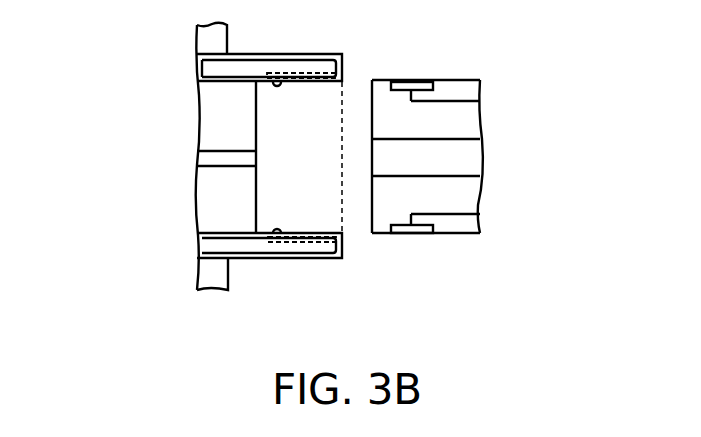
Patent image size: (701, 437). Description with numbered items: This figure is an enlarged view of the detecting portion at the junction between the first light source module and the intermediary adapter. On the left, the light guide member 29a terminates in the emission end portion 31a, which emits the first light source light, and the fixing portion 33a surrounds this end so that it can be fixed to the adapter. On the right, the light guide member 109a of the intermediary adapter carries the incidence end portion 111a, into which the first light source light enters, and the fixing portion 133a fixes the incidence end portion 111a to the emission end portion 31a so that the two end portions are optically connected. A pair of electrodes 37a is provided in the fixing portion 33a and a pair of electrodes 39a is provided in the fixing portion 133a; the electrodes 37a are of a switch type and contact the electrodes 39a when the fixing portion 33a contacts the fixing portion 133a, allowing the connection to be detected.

The light guide member 29a is at (238, 150).
The emission end portion 31a is at (257, 157).
The fixing portion 33a is at (332, 260).
The electrodes 37a is at (302, 73).
The electrodes 39a is at (420, 80).
The light guide member 109a is at (473, 157).
The incidence end portion 111a is at (372, 157).
The fixing portion 133a is at (458, 228).